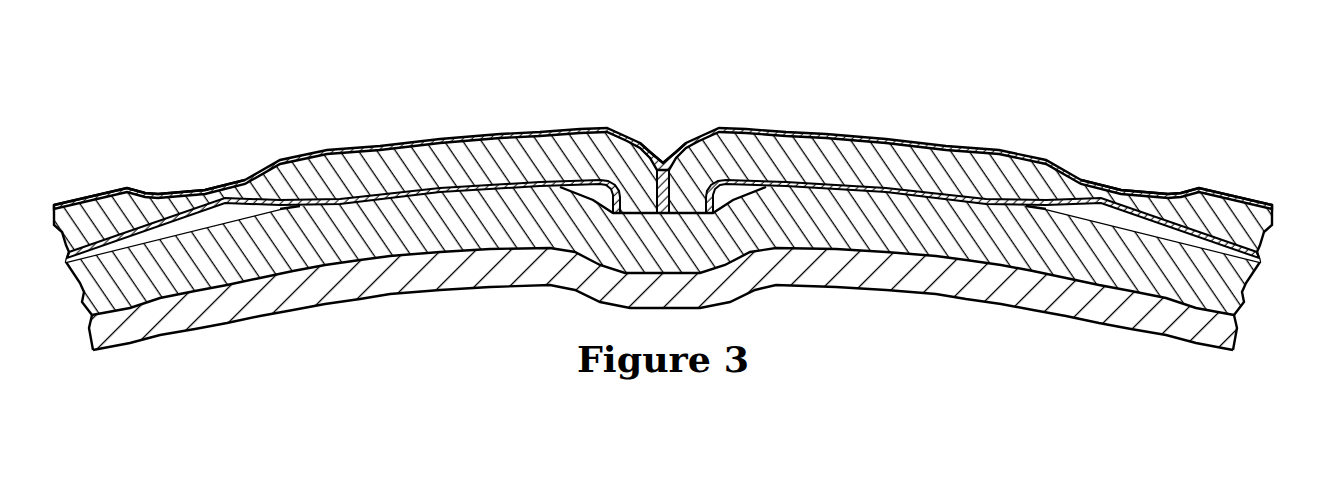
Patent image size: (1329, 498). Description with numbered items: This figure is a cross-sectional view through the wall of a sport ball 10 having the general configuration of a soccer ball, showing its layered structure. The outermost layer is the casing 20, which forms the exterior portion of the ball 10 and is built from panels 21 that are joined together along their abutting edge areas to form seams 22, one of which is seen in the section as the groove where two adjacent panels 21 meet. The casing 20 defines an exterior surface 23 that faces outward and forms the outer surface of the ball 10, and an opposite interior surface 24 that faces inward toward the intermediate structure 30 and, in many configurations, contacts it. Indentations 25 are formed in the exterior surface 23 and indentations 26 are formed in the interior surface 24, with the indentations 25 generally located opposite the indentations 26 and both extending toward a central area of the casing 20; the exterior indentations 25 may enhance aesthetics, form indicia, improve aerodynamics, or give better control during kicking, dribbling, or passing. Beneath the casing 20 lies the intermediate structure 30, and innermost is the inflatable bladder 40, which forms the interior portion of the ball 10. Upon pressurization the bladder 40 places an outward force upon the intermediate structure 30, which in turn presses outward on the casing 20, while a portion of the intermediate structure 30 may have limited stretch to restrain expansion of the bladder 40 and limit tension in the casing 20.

The sport ball 10 is at (352, 86).
The casing 20 is at (663, 163).
The panels 21 is at (421, 138).
The seams 22 is at (662, 161).
The exterior surface 23 is at (514, 130).
The interior surface 24 is at (390, 204).
The indentations 25 is at (206, 188).
The indentations 26 is at (212, 208).
The intermediate structure 30 is at (1250, 306).
The inflatable bladder 40 is at (1143, 342).